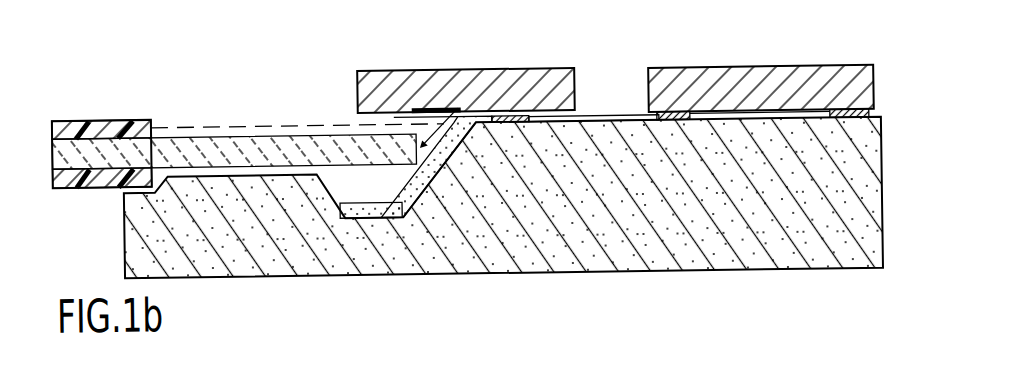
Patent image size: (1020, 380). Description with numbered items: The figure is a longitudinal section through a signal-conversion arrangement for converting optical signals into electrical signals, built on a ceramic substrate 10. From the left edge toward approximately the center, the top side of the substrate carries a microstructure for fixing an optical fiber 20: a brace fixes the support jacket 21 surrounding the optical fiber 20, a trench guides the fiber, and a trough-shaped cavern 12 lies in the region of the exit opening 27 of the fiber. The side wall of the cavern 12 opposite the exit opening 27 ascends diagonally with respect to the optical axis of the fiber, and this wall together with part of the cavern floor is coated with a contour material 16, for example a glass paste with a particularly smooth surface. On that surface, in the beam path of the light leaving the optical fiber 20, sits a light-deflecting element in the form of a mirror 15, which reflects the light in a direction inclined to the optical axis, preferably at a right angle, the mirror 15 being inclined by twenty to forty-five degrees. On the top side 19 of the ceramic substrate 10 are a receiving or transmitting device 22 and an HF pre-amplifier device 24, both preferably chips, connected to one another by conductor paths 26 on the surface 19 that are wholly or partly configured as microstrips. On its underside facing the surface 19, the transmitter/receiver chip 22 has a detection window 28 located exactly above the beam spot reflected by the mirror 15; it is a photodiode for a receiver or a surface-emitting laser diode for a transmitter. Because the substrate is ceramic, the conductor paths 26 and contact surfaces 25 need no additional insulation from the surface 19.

The ceramic substrate 10 is at (802, 244).
The cavern 12 is at (362, 218).
The mirror 15 is at (341, 134).
The contour material 16 is at (428, 186).
The top side of the ceramic substrate 19 is at (238, 119).
The optical fiber 20 is at (188, 135).
The support jacket 21 is at (100, 184).
The receiving or transmitting device 22 is at (562, 79).
The HF pre-amplifier device 24 is at (792, 94).
The contact surfaces 25 is at (858, 115).
The conductor paths 26 is at (608, 117).
The exit opening 27 is at (455, 99).
The detection window 28 is at (418, 107).